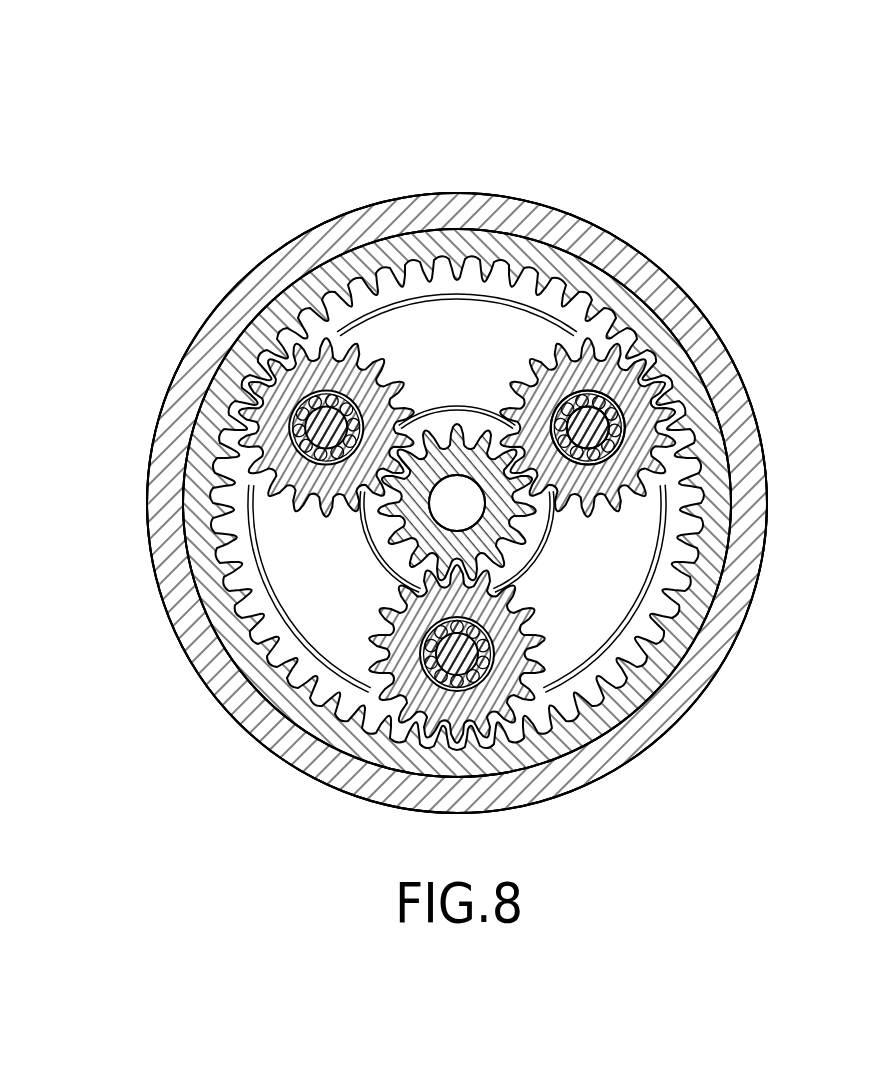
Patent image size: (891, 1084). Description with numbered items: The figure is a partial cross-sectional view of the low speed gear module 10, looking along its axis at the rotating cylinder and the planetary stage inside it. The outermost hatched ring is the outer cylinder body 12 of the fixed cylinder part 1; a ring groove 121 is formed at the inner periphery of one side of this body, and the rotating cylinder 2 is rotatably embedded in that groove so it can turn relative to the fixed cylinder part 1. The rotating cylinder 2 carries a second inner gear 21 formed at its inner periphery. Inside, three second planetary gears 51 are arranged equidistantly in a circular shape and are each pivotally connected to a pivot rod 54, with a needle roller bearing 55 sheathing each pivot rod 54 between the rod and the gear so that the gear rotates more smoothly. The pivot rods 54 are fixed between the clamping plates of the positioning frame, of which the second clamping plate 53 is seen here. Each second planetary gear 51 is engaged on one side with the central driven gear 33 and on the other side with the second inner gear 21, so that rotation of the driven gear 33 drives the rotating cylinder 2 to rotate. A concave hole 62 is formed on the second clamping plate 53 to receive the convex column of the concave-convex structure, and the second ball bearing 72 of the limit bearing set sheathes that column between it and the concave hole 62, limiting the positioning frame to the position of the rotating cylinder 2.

The low speed gear module 10 is at (471, 107).
The fixed cylinder part 1 is at (558, 192).
The outer cylinder body 12 is at (645, 265).
The ring groove 121 is at (637, 310).
The rotating cylinder 2 is at (496, 503).
The second inner gear 21 is at (614, 628).
The second planetary gear 51 is at (640, 393).
The pivot rod 54 is at (590, 423).
The needle roller bearing 55 is at (623, 427).
The second clamping plate 53 is at (615, 562).
The driven gear 33 is at (415, 532).
The second ball bearing 72 is at (380, 525).
The concave hole 62 is at (400, 557).